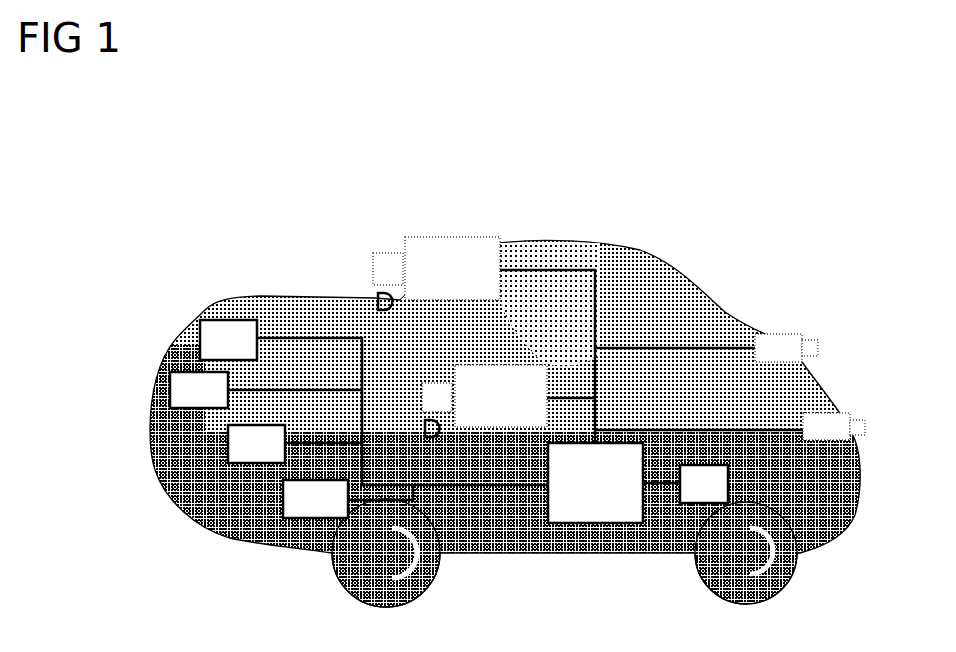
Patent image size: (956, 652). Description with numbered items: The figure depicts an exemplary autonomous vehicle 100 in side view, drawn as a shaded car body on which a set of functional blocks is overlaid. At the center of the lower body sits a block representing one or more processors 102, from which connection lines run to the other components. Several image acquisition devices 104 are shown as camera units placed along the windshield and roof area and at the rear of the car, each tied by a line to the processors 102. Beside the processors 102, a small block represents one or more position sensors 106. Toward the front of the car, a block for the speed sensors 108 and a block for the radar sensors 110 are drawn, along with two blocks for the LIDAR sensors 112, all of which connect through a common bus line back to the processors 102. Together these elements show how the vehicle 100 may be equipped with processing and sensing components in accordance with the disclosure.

The vehicle 100 is at (770, 182).
The processors 102 is at (468, 396).
The image acquisition devices 104 is at (427, 252).
The position sensors 106 is at (706, 506).
The speed sensors 108 is at (348, 499).
The radar sensors 110 is at (266, 390).
The LIDAR sensors 112 is at (281, 391).